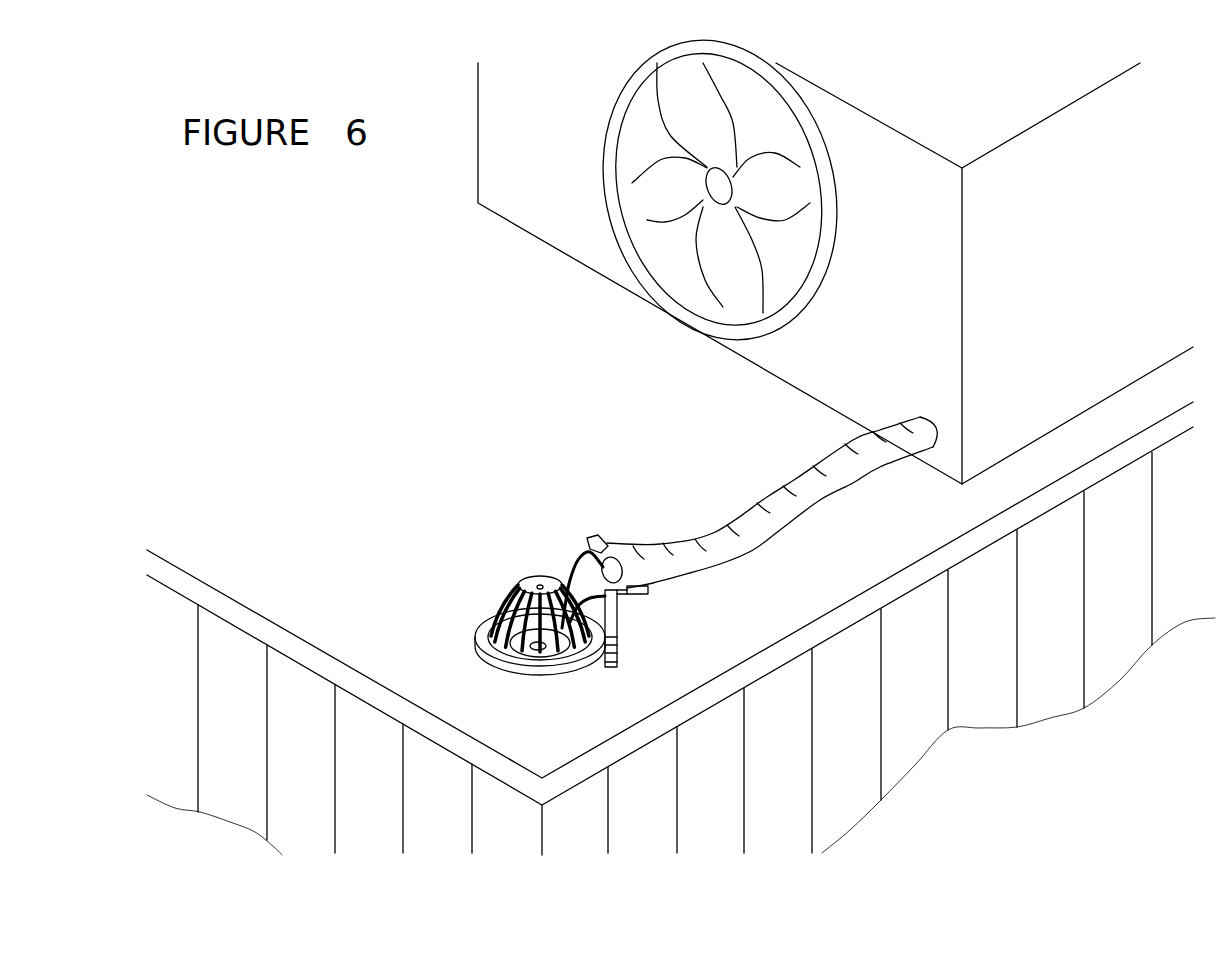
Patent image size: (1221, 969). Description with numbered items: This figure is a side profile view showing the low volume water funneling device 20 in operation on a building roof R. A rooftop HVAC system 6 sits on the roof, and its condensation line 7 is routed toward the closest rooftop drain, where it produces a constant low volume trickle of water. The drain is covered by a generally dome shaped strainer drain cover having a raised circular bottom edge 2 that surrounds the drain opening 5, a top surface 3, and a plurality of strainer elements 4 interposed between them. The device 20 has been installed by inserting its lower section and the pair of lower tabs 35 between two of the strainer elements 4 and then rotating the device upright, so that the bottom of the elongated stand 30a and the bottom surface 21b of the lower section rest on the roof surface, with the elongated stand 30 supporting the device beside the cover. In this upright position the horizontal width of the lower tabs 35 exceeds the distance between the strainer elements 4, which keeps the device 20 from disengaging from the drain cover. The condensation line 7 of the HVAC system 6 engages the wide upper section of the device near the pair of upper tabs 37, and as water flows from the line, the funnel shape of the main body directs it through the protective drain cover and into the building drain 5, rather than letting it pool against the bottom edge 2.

The HVAC system 6 is at (1078, 287).
The roof R is at (285, 431).
The condensation line 7 is at (768, 502).
The low volume water funneling device 20 is at (575, 493).
The raised circular bottom edge 2 is at (450, 635).
The top surface 3 is at (491, 543).
The strainer elements 4 is at (513, 620).
The drain opening 5 is at (507, 662).
The bottom surface of the lower section 21b is at (512, 691).
The lower tabs 35 is at (608, 631).
The elongated stand 30 is at (668, 630).
The bottom of the elongated stand 30a is at (617, 663).
The upper tabs 37 is at (625, 588).